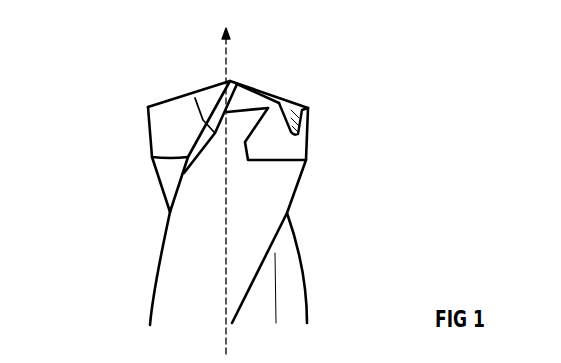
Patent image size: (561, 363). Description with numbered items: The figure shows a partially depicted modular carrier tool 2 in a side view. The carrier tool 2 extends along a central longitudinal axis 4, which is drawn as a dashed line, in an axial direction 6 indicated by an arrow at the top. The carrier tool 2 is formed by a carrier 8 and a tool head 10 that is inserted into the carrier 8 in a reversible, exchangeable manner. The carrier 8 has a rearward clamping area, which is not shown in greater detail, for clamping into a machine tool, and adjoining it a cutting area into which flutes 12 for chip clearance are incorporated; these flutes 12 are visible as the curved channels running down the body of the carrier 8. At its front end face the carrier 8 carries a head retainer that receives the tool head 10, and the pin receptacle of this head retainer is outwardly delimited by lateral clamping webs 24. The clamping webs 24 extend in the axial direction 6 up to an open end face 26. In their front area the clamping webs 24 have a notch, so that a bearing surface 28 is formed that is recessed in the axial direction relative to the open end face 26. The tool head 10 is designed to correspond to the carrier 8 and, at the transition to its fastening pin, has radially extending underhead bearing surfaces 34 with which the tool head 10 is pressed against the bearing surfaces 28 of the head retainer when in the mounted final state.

The modular carrier tool 2 is at (369, 166).
The central longitudinal axis 4 is at (280, 192).
The axial direction 6 is at (232, 50).
The carrier 8 is at (172, 273).
The tool head 10 is at (162, 127).
The flutes 12 is at (270, 287).
The clamping webs 24 is at (250, 110).
The open end face 26 is at (255, 109).
The bearing surface 28 is at (381, 125).
The underhead bearing surfaces 34 is at (288, 159).